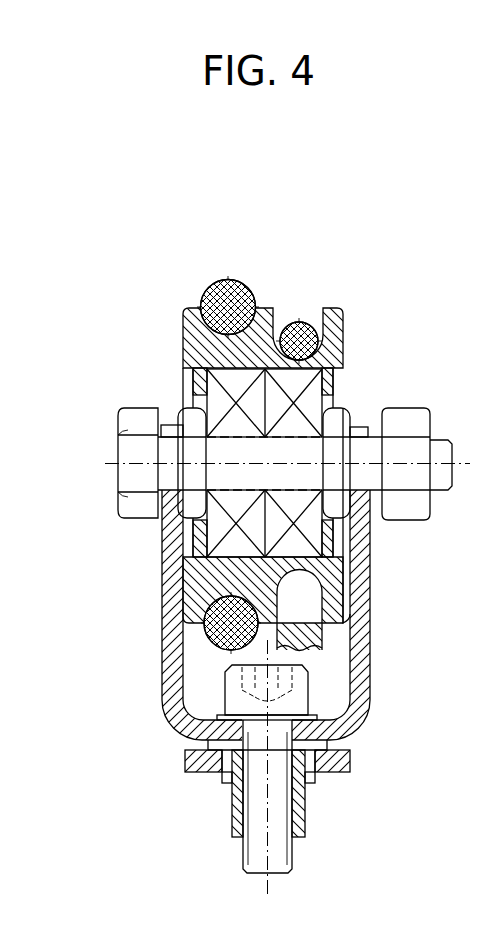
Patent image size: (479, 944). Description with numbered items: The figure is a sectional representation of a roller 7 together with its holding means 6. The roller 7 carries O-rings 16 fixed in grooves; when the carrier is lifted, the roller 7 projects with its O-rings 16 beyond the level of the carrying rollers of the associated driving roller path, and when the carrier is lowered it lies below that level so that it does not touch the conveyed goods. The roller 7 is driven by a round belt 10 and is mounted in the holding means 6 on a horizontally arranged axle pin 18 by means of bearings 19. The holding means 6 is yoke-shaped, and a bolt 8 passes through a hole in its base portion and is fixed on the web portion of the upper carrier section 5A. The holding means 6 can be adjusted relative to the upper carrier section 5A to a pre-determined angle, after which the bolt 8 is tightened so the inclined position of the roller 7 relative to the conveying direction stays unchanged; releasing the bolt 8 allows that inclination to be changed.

The upper carrier section 5A is at (185, 768).
The holding means 6 is at (170, 633).
The roller 7 is at (198, 337).
The bolt 8 is at (237, 703).
The round belt 10 is at (308, 323).
The O-ring 16 is at (238, 283).
The axle pin 18 is at (133, 427).
The bearing 19 is at (223, 525).